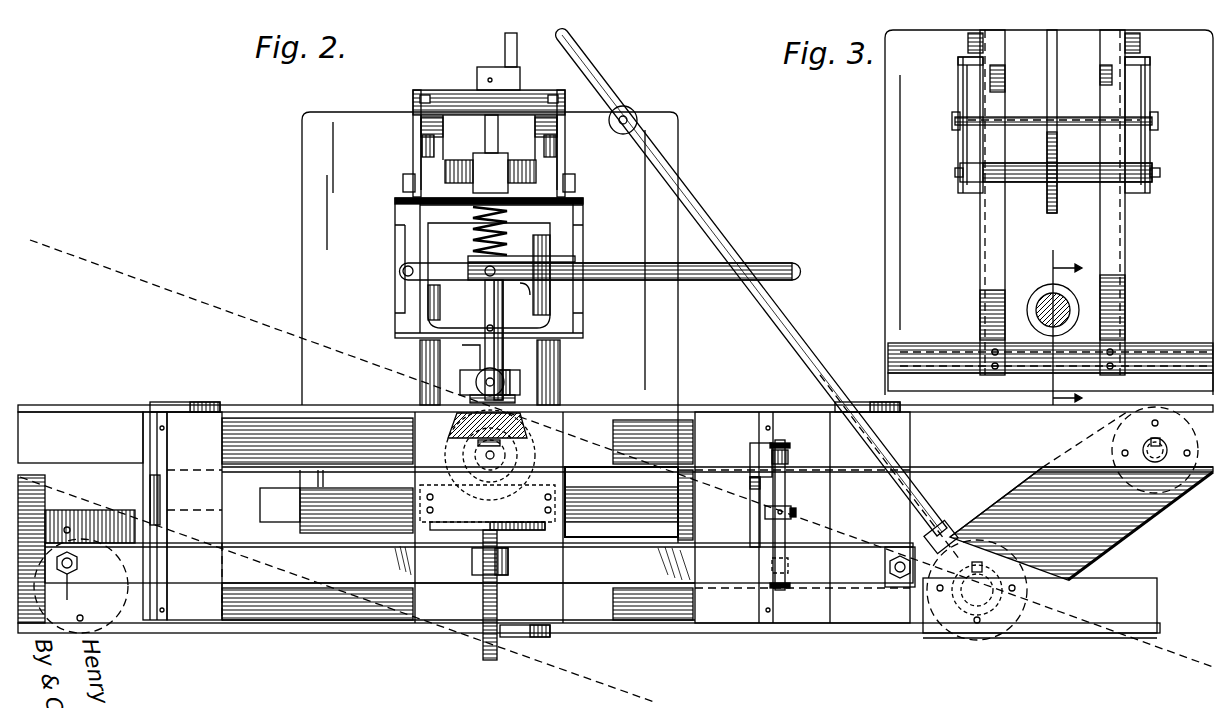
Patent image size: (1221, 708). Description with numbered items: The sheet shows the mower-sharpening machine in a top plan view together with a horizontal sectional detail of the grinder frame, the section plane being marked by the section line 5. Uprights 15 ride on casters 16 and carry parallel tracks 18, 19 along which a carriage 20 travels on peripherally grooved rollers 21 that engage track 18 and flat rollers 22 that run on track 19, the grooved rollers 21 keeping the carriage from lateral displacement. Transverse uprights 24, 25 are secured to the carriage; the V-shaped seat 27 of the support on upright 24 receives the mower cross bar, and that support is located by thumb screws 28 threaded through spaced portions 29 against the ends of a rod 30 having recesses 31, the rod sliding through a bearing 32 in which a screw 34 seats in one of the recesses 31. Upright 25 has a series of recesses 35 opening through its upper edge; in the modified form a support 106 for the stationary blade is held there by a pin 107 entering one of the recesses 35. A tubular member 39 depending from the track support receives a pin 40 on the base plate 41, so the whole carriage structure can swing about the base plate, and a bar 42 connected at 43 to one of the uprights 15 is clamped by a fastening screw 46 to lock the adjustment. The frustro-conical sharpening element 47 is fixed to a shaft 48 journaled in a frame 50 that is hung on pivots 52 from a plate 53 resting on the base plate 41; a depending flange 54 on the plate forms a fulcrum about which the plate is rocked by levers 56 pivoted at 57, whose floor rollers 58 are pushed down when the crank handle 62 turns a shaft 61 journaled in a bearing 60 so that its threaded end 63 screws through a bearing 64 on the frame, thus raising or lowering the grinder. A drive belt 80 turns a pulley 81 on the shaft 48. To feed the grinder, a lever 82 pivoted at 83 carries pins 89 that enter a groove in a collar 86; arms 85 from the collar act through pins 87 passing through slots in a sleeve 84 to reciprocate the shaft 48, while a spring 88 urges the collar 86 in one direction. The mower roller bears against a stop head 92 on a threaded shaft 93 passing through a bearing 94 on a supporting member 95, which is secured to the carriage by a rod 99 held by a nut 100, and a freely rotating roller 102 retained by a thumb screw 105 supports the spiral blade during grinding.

In FIG. 3, the section line 5- 5 is at (1052, 330).
In FIG. 2, the uprights 15 is at (1020, 633).
In FIG. 2, the rollers or casters 16 is at (950, 625).
In FIG. 2, the track or guide 18 is at (276, 400).
In FIG. 2, the track or guide 19 is at (652, 633).
In FIG. 2, the carriage 20 is at (268, 623).
In FIG. 2, the peripherally grooved rollers 21 is at (200, 400).
In FIG. 2, the flat rollers 22 is at (540, 637).
In FIG. 2, the upright 24 is at (762, 430).
In FIG. 2, the upright 25 is at (150, 432).
In FIG. 2, the notch or seat 27 is at (750, 480).
In FIG. 2, the thumb screws 28 is at (780, 446).
In FIG. 2, the spaced portions 29 is at (788, 462).
In FIG. 2, the rod 30 is at (785, 486).
In FIG. 2, the recesses 31 is at (796, 510).
In FIG. 2, the bearing 32 is at (790, 515).
In FIG. 2, the screw or fastening element 34 is at (798, 511).
In FIG. 2, the recesses 35 is at (165, 510).
In FIG. 3, the tubular member 39 is at (1068, 320).
In FIG. 3, the pin or projection 40 is at (1040, 318).
In FIG. 2, the base plate or member 41 is at (676, 162).
In FIG. 3, the base plate or member 41 is at (885, 216).
In FIG. 2, the bar or rod 42 is at (722, 198).
In FIG. 2, the connection 43 is at (945, 530).
In FIG. 2, the fastening screw 46 is at (630, 112).
In FIG. 2, the sharpening element 47 is at (530, 425).
In FIG. 2, the shaft 48 is at (515, 398).
In FIG. 2, the frame 50 is at (405, 244).
In FIG. 3, the frame 50 is at (958, 72).
In FIG. 3, the pivots 52 is at (952, 124).
In FIG. 3, the plate or member 53 is at (980, 272).
In FIG. 3, the depending flange 54 is at (1178, 350).
In FIG. 2, the levers 56 is at (421, 128).
In FIG. 2, the pivot 57 is at (422, 152).
In FIG. 3, the pivot 57 is at (968, 40).
In FIG. 2, the rollers 58 is at (403, 185).
In FIG. 3, the rollers 58 is at (958, 60).
In FIG. 2, the bearing 60 is at (545, 98).
In FIG. 2, the shaft 61 is at (498, 128).
In FIG. 2, the crank handle 62 is at (505, 46).
In FIG. 3, the threaded portion 63 is at (1058, 60).
In FIG. 3, the bearing 64 is at (1085, 183).
In FIG. 2, the drive belt 80 is at (501, 213).
In FIG. 2, the pulley 81 is at (475, 158).
In FIG. 2, the lever 82 is at (634, 281).
In FIG. 2, the pivot 83 is at (403, 273).
In FIG. 2, the sleeve 84 is at (478, 352).
In FIG. 2, the arms 85 is at (485, 303).
In FIG. 2, the collar 86 is at (532, 298).
In FIG. 2, the pins or projections 87 is at (488, 330).
In FIG. 2, the spring 88 is at (473, 226).
In FIG. 2, the pins 89 is at (494, 266).
In FIG. 2, the stop device or head 92 is at (515, 518).
In FIG. 2, the threaded shaft 93 is at (497, 600).
In FIG. 2, the bearing 94 is at (472, 560).
In FIG. 2, the supporting member 95 is at (345, 585).
In FIG. 2, the rod or bar 99 is at (66, 578).
In FIG. 2, the nut or collar 100 is at (520, 375).
In FIG. 2, the roller 102 is at (478, 444).
In FIG. 2, the thumb screw 105 is at (504, 382).
In FIG. 2, the support 106 is at (165, 468).
In FIG. 2, the pin 107 is at (150, 486).